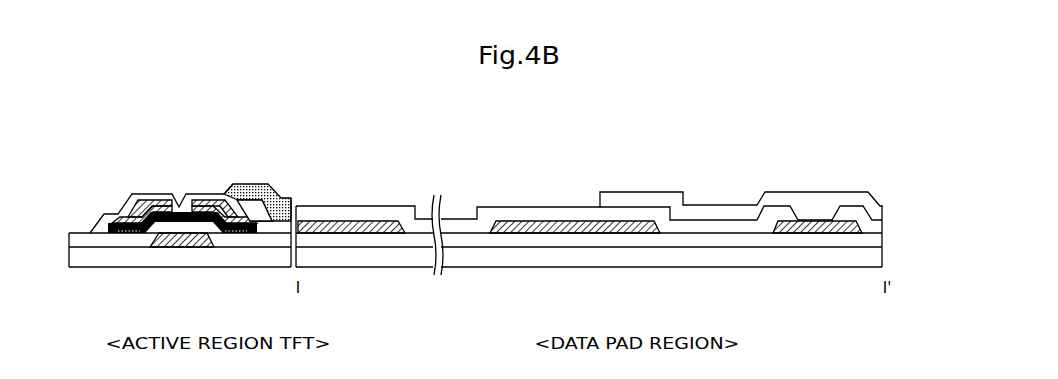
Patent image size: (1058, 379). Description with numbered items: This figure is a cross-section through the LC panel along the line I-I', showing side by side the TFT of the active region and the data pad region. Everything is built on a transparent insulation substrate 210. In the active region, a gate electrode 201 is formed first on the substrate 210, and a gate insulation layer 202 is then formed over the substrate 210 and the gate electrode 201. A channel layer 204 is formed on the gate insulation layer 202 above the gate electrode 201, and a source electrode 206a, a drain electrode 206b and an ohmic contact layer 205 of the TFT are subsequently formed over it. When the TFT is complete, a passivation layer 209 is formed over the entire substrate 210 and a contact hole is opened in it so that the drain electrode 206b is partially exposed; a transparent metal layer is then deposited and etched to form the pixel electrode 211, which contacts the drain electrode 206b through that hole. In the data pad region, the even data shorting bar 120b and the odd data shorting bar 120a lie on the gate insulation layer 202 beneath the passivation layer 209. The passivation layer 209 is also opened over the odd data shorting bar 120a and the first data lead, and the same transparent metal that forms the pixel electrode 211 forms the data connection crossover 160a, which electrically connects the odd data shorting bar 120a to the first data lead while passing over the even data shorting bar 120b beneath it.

The gate electrode 201 is at (178, 245).
The gate insulation layer 202 is at (265, 240).
The channel layer 204 is at (112, 216).
The ohmic contact layer 205 is at (133, 210).
The source electrode 206a is at (158, 194).
The drain electrode 206b is at (220, 194).
The passivation layer 209 is at (178, 192).
The transparent insulation substrate 210 is at (117, 257).
The pixel electrode 211 is at (271, 184).
The odd data shorting bar 120a is at (815, 220).
The even data shorting bar 120b is at (326, 218).
The data connection crossover 160a is at (882, 203).